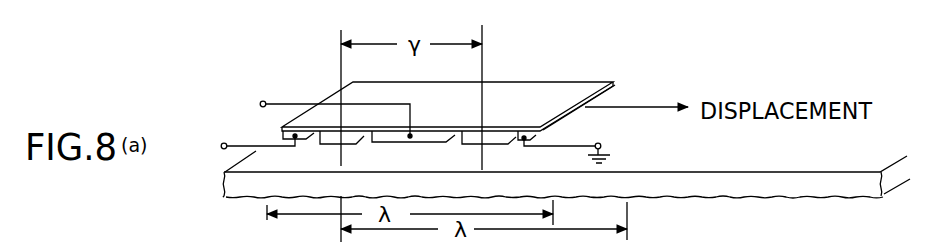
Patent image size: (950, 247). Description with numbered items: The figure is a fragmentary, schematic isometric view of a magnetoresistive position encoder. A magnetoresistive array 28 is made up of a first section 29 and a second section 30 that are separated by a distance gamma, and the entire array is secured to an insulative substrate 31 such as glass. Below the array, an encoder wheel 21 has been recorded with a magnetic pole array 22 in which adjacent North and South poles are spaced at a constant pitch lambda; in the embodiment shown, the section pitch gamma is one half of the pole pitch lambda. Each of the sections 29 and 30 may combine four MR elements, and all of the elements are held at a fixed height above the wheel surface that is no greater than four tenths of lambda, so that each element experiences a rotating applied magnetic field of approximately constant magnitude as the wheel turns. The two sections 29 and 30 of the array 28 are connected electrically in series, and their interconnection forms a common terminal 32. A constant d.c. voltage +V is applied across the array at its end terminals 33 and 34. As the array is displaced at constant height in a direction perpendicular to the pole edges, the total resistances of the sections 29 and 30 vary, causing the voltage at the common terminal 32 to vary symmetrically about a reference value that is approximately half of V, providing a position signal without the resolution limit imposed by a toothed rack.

The encoder wheel 21 is at (428, 196).
The magnetic pole array 22 is at (567, 187).
The magnetoresistive array 28 is at (418, 147).
The first section 29 is at (336, 141).
The second section 30 is at (490, 140).
The insulative substrate 31 is at (545, 96).
The common terminal 32 is at (332, 107).
The terminal 33 is at (244, 141).
The terminal 34 is at (567, 141).